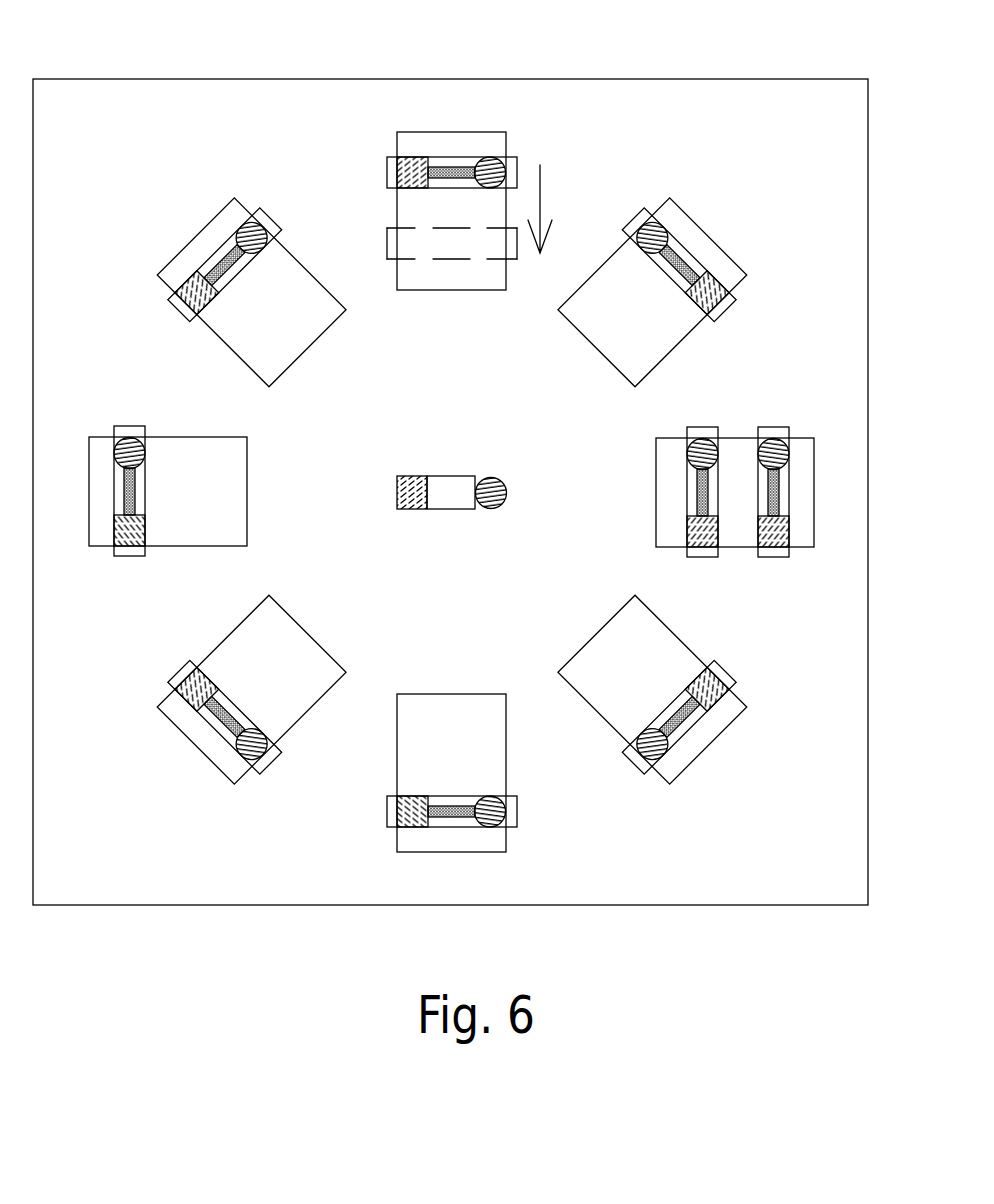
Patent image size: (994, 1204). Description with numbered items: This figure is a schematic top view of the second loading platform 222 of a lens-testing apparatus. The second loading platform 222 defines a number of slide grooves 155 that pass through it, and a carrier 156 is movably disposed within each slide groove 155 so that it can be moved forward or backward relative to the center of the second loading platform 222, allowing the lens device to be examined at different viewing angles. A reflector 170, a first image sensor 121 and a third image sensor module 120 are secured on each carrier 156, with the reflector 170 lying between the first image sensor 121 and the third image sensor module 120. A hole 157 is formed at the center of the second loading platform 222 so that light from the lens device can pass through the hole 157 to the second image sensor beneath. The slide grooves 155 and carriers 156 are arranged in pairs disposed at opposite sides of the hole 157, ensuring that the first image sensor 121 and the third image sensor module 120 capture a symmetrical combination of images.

The second loading platform 222 is at (765, 93).
The carrier 156 is at (392, 175).
The slide groove 155 is at (462, 273).
The hole 157 is at (443, 488).
The third image sensor module 120 is at (652, 222).
The first image sensor 121 is at (733, 295).
The reflector 170 is at (688, 265).